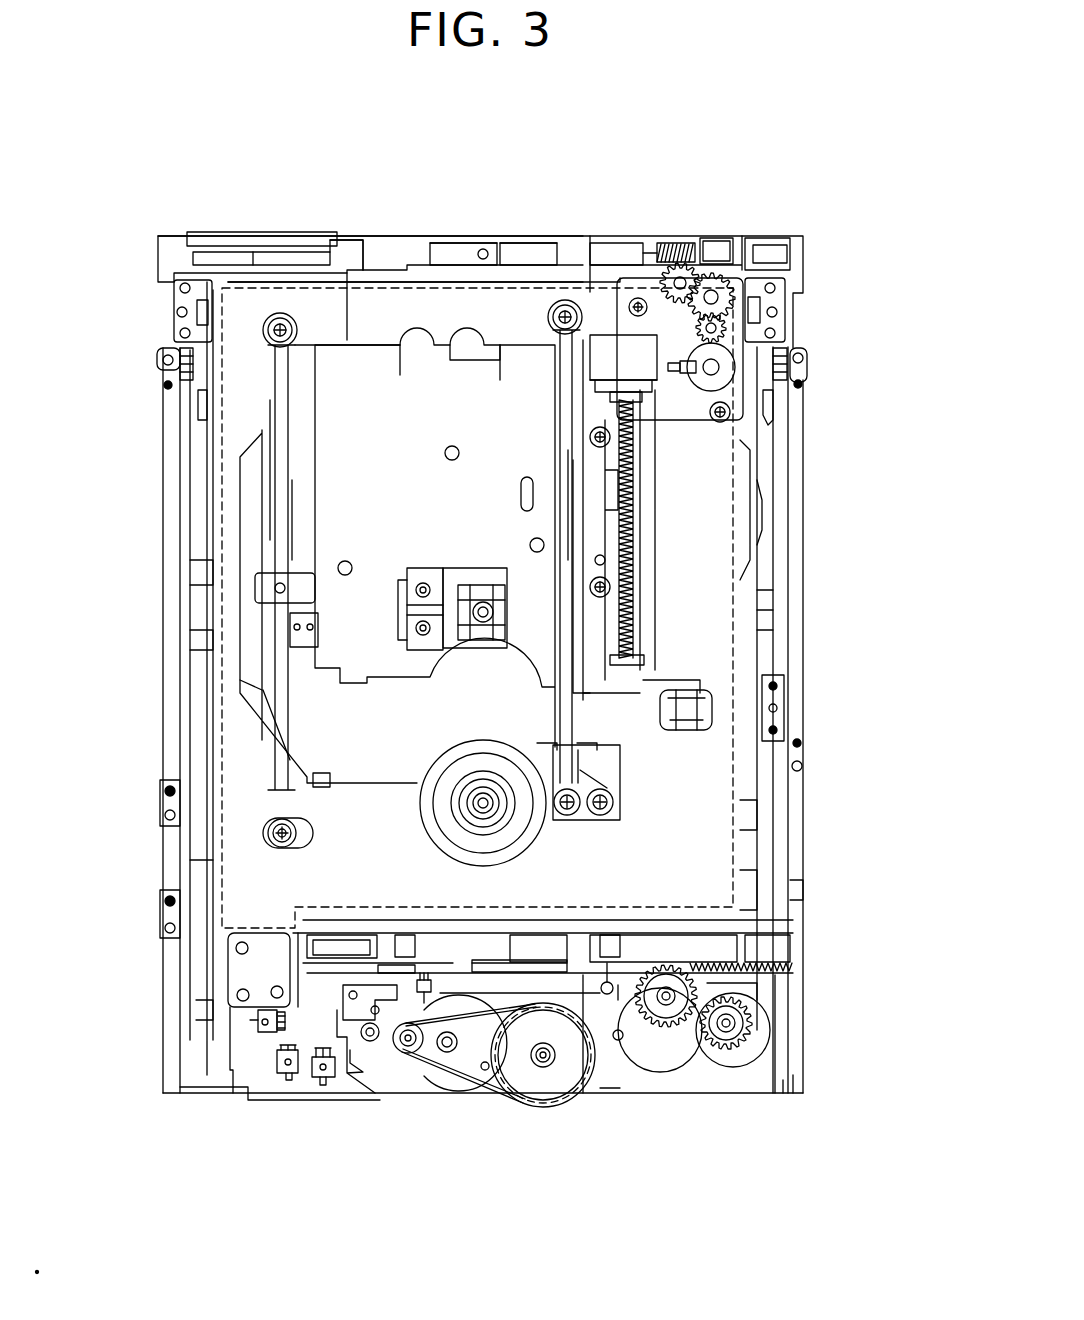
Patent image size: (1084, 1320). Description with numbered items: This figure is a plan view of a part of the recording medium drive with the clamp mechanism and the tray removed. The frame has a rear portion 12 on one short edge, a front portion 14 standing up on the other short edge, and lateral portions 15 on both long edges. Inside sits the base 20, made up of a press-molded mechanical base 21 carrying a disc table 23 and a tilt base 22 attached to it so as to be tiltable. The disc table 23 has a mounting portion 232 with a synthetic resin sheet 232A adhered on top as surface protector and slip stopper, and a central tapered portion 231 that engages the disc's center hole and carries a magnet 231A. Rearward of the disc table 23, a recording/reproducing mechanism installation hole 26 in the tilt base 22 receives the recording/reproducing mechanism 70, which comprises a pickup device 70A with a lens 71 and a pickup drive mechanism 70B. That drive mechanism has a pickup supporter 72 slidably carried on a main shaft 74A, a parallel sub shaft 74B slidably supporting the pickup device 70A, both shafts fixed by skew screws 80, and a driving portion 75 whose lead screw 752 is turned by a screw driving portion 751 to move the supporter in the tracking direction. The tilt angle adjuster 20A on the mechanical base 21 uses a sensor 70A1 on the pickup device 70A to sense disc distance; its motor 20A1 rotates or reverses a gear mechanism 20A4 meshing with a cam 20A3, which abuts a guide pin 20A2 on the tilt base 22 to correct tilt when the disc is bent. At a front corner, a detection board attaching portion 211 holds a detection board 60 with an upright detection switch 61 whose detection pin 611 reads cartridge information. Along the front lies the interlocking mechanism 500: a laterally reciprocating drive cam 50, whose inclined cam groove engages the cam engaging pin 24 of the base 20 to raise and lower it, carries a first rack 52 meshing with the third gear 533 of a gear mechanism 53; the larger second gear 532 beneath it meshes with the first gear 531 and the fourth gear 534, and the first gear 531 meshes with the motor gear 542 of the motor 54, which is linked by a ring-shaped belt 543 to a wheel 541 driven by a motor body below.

The rear portion 12 is at (690, 240).
The front portion 14 is at (215, 1094).
The lateral portions 15 is at (160, 443).
The base 20 is at (525, 300).
The tilt angle adjuster 20A is at (709, 406).
The motor 20A1 is at (719, 240).
The guide pin 20A2 is at (708, 393).
The cam 20A3 is at (721, 425).
The gear mechanism 20A4 is at (748, 247).
The mechanical base 21 is at (492, 300).
The tilt base 22 is at (448, 237).
The disc table 23 is at (476, 823).
The tapered portion 231 is at (490, 816).
The magnet 231A is at (472, 813).
The mounting portion 232 is at (440, 800).
The sheet 232A is at (453, 810).
The cam engaging pin 24 is at (375, 942).
The recording/reproducing mechanism installation hole 26 is at (344, 338).
The detection board attaching portion 211 is at (235, 970).
The drive cam 50 is at (474, 1043).
The first rack 52 is at (790, 955).
The gear mechanism 53 is at (698, 1095).
The first gear 531 is at (655, 1022).
The second gear 532 is at (672, 1042).
The third gear 533 is at (716, 1048).
The fourth gear 534 is at (748, 1042).
The motor 54 is at (490, 1111).
The wheel 541 is at (410, 1056).
The motor gear 542 is at (540, 1090).
The belt 543 is at (485, 1085).
The detection board 60 is at (305, 1075).
The detection switch 61 is at (290, 1003).
The detection pin 611 is at (300, 1062).
The recording/reproducing mechanism 70 is at (435, 440).
The pickup device 70A is at (431, 600).
The sensor 70A1 is at (418, 582).
The pickup drive mechanism 70B is at (506, 442).
The lens 71 is at (486, 645).
The pickup supporter 72 is at (393, 684).
The main shaft 74A is at (563, 377).
The sub shaft 74B is at (290, 433).
The driving portion 75 is at (715, 560).
The screw driving portion 751 is at (625, 346).
The lead screw 752 is at (664, 534).
The skew screws 80 is at (280, 312).
The interlocking mechanism 500 is at (806, 1097).